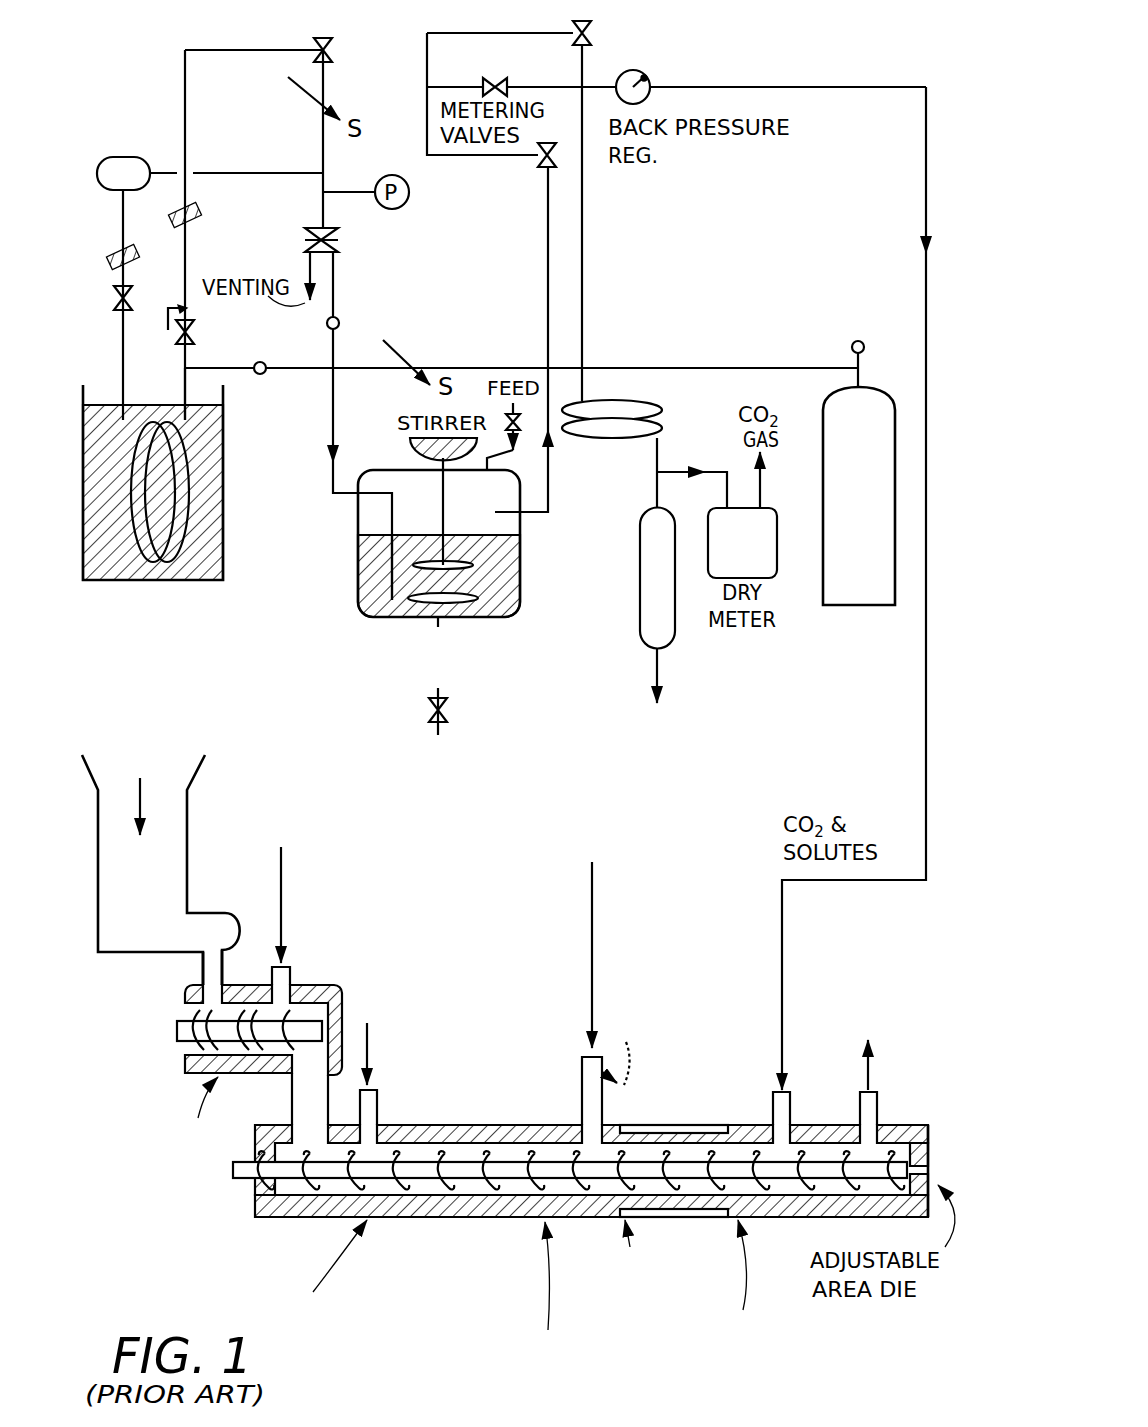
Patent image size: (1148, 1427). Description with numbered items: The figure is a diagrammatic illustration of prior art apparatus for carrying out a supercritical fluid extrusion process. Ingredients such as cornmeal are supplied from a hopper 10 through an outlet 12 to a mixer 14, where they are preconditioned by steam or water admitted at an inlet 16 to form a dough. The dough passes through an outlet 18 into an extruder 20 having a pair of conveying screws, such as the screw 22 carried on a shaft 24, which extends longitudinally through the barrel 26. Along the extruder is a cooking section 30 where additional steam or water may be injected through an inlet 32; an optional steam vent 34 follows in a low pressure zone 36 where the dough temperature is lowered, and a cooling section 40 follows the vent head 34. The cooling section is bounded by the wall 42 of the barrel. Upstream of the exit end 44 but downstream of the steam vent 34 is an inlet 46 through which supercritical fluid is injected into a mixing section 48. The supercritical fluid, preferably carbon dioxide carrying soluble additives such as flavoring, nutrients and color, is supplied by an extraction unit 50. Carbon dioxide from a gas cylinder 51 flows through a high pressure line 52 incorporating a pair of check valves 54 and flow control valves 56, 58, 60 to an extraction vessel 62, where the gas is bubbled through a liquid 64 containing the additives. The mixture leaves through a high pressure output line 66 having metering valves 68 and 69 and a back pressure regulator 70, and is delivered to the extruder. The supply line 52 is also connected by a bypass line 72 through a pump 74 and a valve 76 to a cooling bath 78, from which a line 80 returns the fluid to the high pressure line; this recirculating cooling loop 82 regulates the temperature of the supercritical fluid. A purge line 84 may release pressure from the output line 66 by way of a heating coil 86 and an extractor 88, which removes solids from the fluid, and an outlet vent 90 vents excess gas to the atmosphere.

The hopper 10 is at (145, 943).
The outlet 12 is at (223, 963).
The mixer 14 is at (325, 987).
The inlet 16 is at (292, 973).
The outlet 18 is at (307, 1077).
The extruder 20 is at (450, 1123).
The screw 22 is at (478, 1156).
The shaft 24 is at (247, 1180).
The barrel 26 is at (440, 1197).
The cooking section 30 is at (392, 1226).
The inlet 32 is at (378, 1103).
The steam vent 34 is at (582, 1085).
The low pressure zone 36 is at (507, 1298).
The cooling section 40 is at (660, 1216).
The cooling section barrel wall 42 is at (680, 1125).
The exit end 44 is at (885, 1120).
The inlet 46 is at (790, 1110).
The mixing section 48 is at (774, 1297).
The extraction unit 50 is at (845, 153).
The gas cylinder 51 is at (838, 608).
The high pressure line 52 is at (250, 50).
The check valves 54 is at (340, 323).
The flow control valve 56 is at (196, 330).
The flow control valve 58 is at (327, 37).
The flow control valve 60 is at (338, 230).
The extraction vessel 62 is at (358, 497).
The liquid 64 is at (510, 585).
The high pressure output line 66 is at (742, 86).
The metering valve 68 is at (540, 162).
The metering valve 69 is at (502, 78).
The back pressure regulator 70 is at (628, 68).
The bypass line 72 is at (220, 172).
The pump 74 is at (150, 158).
The valve 76 is at (131, 293).
The cooling bath 78 is at (207, 560).
The line 80 is at (185, 392).
The recirculating cooling loop 82 is at (117, 327).
The purge line 84 is at (513, 32).
The heating coil 86 is at (648, 402).
The extractor 88 is at (640, 620).
The outlet vent 90 is at (763, 493).